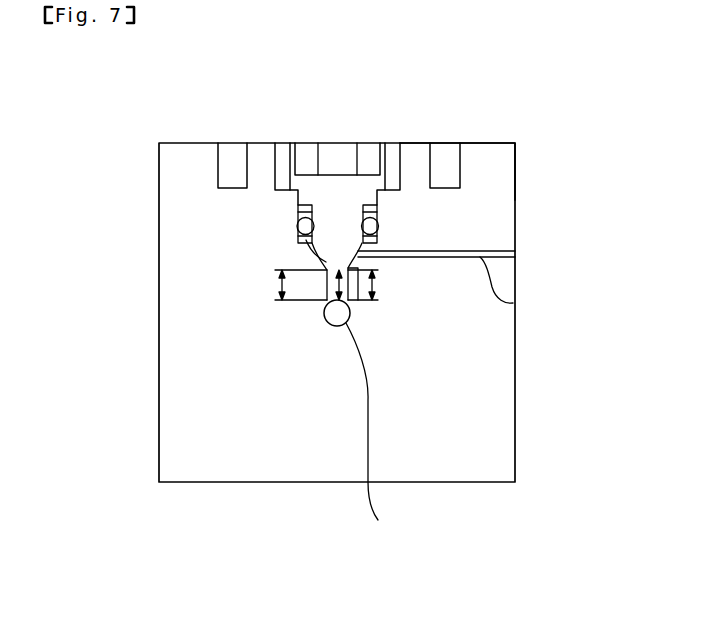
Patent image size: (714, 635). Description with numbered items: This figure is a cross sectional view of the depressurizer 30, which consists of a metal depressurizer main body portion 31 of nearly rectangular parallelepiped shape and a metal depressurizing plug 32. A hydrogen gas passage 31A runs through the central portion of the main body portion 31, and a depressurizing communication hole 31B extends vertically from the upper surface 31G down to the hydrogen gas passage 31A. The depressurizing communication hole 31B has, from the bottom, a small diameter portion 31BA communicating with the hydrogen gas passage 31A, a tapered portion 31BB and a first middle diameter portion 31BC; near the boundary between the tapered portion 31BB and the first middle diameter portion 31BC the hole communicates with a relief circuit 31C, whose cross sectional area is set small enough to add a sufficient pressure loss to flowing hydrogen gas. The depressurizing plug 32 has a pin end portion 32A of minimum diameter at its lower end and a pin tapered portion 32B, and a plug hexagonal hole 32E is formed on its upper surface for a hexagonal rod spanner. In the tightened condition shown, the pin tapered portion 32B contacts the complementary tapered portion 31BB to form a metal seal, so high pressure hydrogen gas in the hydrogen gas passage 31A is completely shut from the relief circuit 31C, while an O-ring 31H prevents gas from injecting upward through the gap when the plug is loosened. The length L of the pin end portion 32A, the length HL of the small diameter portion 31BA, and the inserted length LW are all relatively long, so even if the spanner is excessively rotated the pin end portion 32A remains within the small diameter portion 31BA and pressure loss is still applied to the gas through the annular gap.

The depressurizer 30 is at (144, 80).
The depressurizer main body portion 31 is at (156, 460).
The hydrogen gas passage 31A is at (385, 429).
The depressurizing communication hole 31B is at (314, 212).
The small diameter portion 31BA is at (334, 268).
The tapered portion 31BB is at (362, 252).
The first middle diameter portion 31BC is at (360, 250).
The relief circuit 31C is at (513, 303).
The upper surface 31G is at (507, 143).
The O-ring 31H is at (298, 224).
The depressurizing plug 32 is at (335, 157).
The pin end portion 32A is at (352, 320).
The pin tapered portion 32B is at (326, 262).
The plug hexagonal hole 32E is at (295, 161).
The length of the small diameter portion HL is at (283, 290).
The length of the pin end portion L is at (324, 285).
The inserted length of the pin end portion LW is at (380, 286).